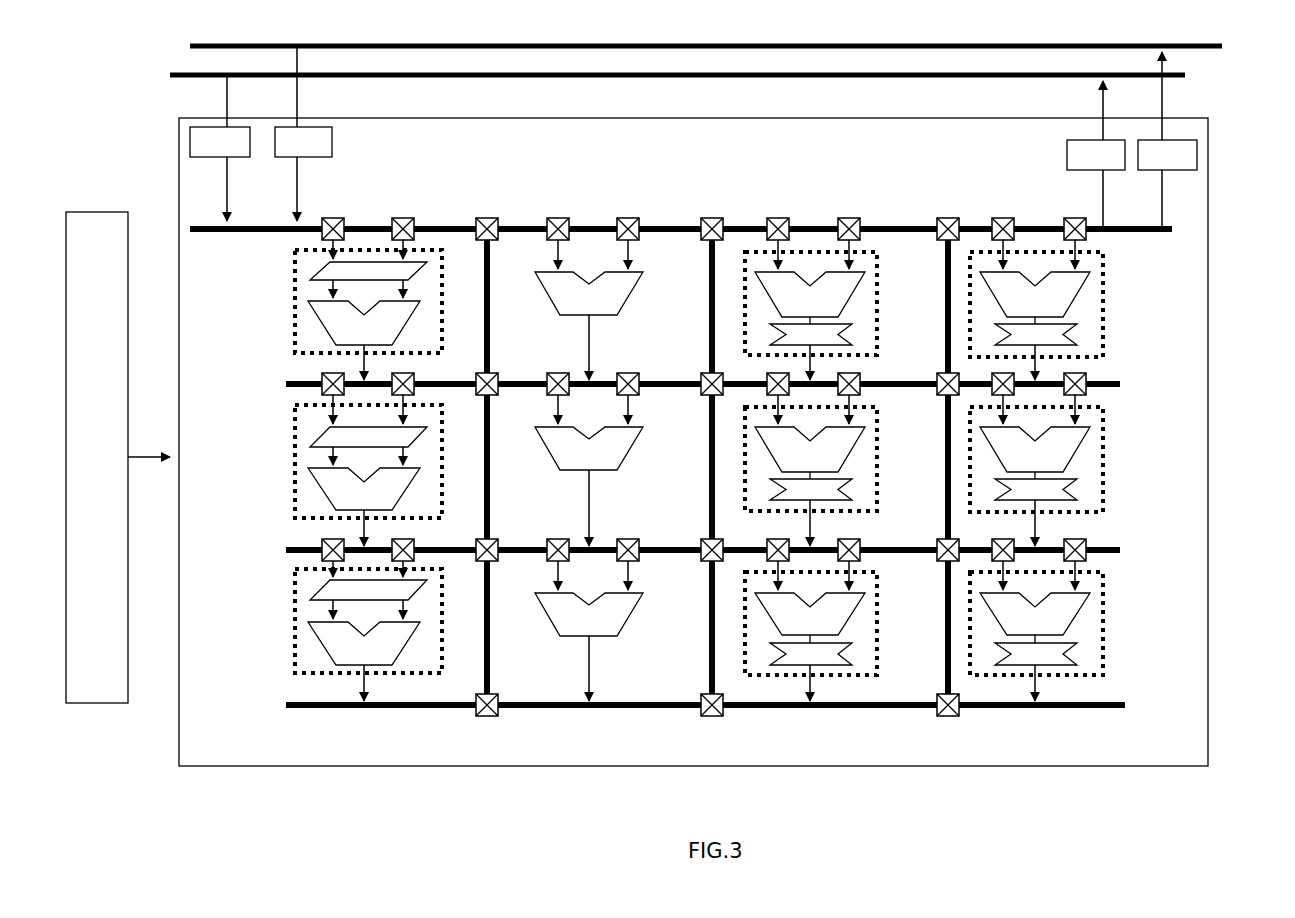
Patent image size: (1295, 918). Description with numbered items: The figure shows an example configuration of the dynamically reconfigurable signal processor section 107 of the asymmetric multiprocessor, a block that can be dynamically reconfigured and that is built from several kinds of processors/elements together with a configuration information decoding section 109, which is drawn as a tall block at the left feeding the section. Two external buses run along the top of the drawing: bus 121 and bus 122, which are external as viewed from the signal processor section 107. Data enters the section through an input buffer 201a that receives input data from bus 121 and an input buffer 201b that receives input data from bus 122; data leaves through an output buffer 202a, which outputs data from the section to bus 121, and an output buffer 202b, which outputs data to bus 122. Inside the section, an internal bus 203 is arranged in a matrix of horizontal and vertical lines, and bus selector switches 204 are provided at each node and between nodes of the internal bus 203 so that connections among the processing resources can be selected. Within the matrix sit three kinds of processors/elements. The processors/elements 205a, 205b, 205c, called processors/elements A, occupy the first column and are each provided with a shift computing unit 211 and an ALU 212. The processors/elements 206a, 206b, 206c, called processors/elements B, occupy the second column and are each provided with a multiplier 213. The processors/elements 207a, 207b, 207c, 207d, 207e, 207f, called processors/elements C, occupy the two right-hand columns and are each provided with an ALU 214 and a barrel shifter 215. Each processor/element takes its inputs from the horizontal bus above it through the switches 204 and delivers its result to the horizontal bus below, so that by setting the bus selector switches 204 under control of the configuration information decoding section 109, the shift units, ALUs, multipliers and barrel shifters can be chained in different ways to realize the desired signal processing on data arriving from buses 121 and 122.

The dynamically reconfigurable signal processor section 107 is at (1208, 197).
The configuration information decoding section 109 is at (88, 212).
The bus 121 is at (998, 46).
The bus 122 is at (892, 77).
The input buffer 201a is at (332, 140).
The input buffer 201b is at (190, 146).
The output buffer 202a is at (1197, 150).
The output buffer 202b is at (1067, 152).
The internal bus 203 is at (326, 706).
The bus selector switch 204 is at (476, 714).
The processor/element A 205a is at (357, 310).
The processor/element A 205b is at (297, 436).
The processor/element A 205c is at (297, 600).
The processor/element B 206a is at (615, 310).
The processor/element B 206b is at (625, 486).
The processor/element B 206c is at (620, 648).
The processor/element C 207a is at (841, 310).
The processor/element C 207b is at (903, 490).
The processor/element C 207c is at (878, 670).
The processor/element C 207d is at (1103, 305).
The processor/element C 207e is at (1103, 450).
The processor/element C 207f is at (1103, 615).
The shift computing unit 211 is at (412, 274).
The ALU 212 is at (400, 330).
The multiplier 213 is at (633, 290).
The ALU 214 is at (853, 291).
The barrel shifter 215 is at (848, 324).